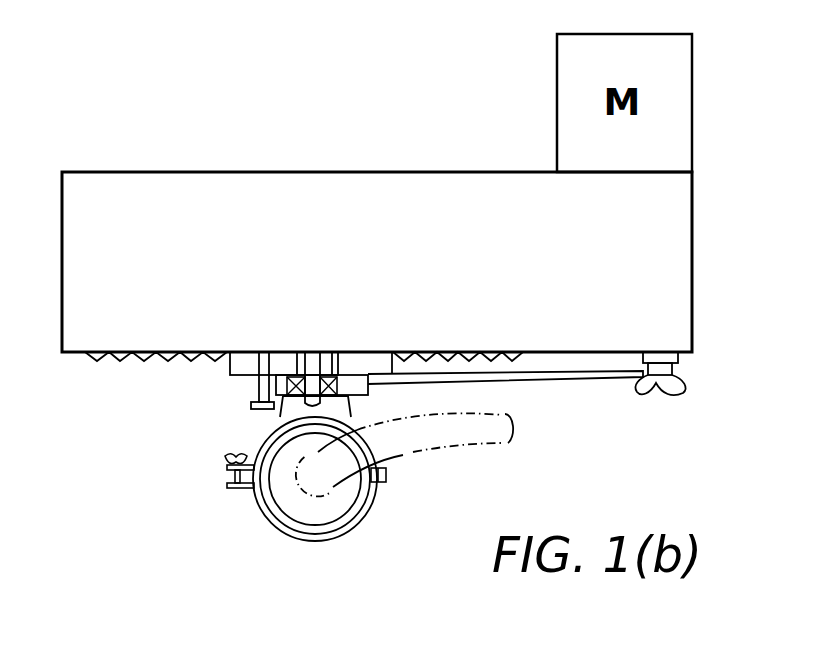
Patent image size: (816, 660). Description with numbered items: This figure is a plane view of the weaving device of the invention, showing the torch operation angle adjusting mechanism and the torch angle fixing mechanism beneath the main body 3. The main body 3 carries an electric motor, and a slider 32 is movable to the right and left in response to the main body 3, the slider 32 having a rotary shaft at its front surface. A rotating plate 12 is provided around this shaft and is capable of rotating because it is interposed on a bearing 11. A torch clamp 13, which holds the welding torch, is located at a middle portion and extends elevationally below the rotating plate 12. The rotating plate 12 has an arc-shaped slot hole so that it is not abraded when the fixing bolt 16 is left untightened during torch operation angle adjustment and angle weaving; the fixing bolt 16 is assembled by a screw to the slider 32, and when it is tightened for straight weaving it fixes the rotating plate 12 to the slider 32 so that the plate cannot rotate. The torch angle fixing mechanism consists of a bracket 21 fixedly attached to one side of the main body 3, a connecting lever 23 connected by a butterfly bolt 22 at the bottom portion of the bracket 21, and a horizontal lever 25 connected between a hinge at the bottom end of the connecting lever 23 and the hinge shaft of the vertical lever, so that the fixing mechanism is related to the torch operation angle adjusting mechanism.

The main body 3 is at (465, 200).
The slider 32 is at (246, 362).
The bearing 11 is at (338, 366).
The rotating plate 12 is at (258, 383).
The fixing bolt 16 is at (252, 407).
The torch clamp 13 is at (289, 539).
The horizontal lever 25 is at (594, 380).
The bracket 21 is at (678, 354).
The connecting lever 23 is at (673, 368).
The butterfly bolt 22 is at (665, 395).